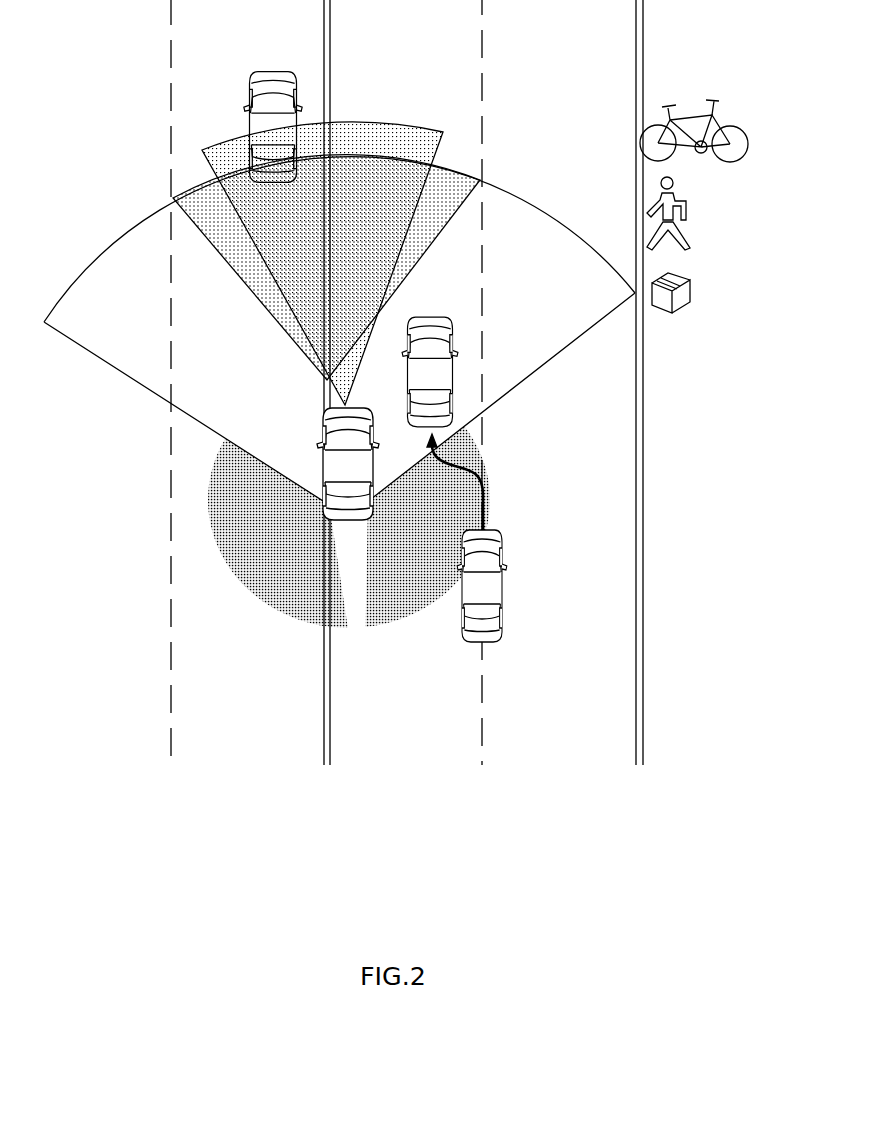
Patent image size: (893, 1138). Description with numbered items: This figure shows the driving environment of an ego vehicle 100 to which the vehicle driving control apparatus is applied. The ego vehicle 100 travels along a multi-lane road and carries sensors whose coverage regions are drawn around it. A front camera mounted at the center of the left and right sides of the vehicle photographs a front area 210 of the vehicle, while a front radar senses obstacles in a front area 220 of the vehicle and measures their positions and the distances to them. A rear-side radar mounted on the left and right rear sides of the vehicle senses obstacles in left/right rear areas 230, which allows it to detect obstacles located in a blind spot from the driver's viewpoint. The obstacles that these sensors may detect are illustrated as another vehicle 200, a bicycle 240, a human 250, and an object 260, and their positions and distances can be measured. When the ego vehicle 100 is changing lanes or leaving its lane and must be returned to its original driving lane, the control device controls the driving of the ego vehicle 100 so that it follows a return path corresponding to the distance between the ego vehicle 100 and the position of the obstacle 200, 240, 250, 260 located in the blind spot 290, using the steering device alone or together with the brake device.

The ego vehicle 100 is at (345, 475).
The vehicle 200 is at (437, 387).
The front area 210 is at (447, 180).
The front area 220 is at (405, 138).
The left/right rear areas 230 is at (307, 615).
The bicycle 240 is at (695, 80).
The human 250 is at (712, 209).
The object 260 is at (712, 290).
The blind spot 290 is at (135, 347).